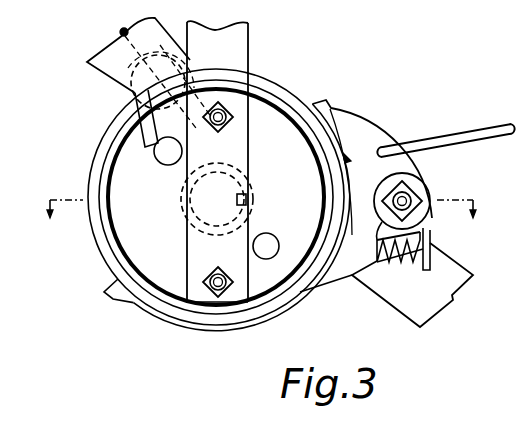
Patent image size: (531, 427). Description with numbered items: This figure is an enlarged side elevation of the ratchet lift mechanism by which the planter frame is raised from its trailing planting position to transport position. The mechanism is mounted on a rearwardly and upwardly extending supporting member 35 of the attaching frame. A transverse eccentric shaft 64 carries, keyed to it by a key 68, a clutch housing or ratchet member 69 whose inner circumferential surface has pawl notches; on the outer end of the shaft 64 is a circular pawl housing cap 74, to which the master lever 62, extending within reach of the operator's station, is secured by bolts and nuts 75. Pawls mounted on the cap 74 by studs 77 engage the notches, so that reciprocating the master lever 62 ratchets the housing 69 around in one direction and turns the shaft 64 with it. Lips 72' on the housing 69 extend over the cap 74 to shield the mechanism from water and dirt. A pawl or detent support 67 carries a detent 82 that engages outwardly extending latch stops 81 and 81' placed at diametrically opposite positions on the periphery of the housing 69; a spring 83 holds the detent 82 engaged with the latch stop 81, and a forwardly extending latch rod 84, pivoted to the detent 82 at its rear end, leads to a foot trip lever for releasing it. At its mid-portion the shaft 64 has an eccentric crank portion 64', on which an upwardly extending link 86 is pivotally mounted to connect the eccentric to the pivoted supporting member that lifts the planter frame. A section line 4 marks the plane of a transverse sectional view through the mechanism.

The section line 4- 4 is at (260, 200).
The right hand supporting member 35 is at (473, 273).
The master lever 62 is at (249, 35).
The transverse eccentric shaft 64 is at (233, 197).
The eccentric crank portion 64' is at (146, 82).
The pawl support 67 is at (343, 258).
The key 68 is at (247, 190).
The clutch housing 69 is at (266, 310).
The lips 72' is at (198, 325).
The circular pawl housing cap 74 is at (274, 110).
The bolts and nuts 75 is at (228, 108).
The studs 77 is at (160, 160).
The latch stop 81 is at (372, 157).
The latch stop 81' is at (108, 303).
The detent 82 is at (372, 132).
The spring 83 is at (392, 262).
The latch rod 84 is at (447, 139).
The link 86 is at (120, 32).